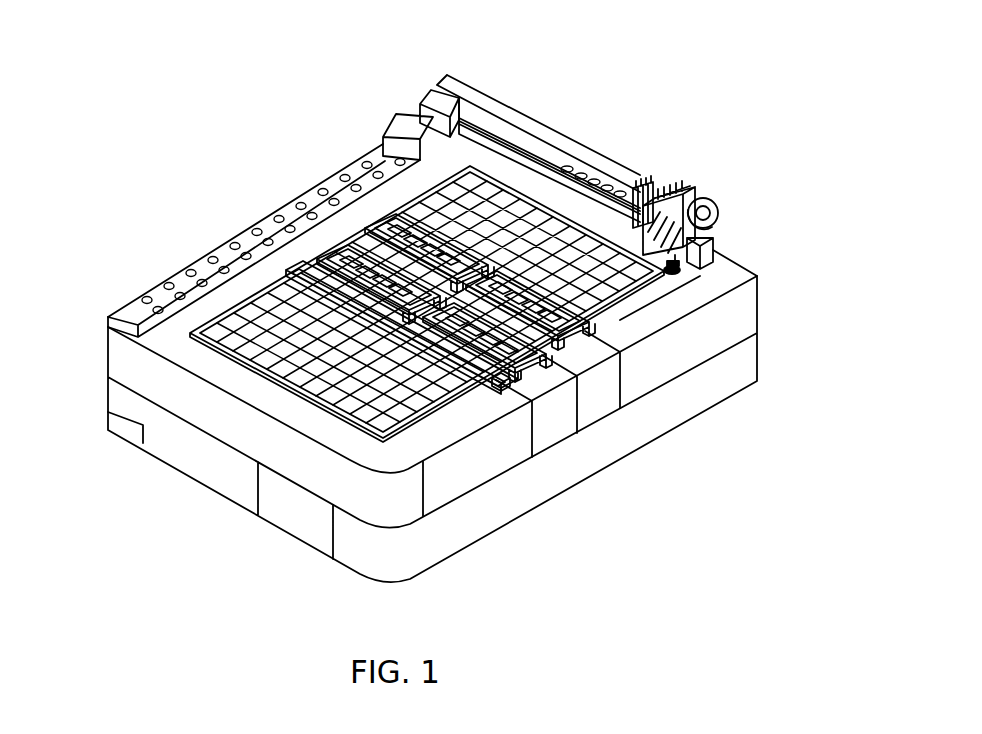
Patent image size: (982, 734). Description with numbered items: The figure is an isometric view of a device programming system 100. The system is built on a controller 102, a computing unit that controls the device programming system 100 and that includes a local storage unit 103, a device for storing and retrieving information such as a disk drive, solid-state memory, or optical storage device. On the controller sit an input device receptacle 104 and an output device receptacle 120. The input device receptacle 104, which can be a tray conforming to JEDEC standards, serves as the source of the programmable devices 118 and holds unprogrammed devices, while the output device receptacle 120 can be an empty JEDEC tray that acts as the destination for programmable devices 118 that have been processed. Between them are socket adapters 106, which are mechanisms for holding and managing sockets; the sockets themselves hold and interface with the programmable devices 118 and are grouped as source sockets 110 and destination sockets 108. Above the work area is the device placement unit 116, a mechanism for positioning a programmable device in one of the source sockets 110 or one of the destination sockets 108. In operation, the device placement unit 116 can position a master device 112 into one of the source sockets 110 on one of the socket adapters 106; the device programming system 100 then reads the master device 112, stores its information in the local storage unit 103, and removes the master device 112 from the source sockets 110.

The device programming system 100 is at (158, 58).
The controller 102 is at (177, 447).
The local storage unit 103 is at (124, 430).
The input device receptacle 104 is at (212, 359).
The socket adapters 106 is at (318, 320).
The destination sockets 108 is at (300, 283).
The source sockets 110 is at (292, 272).
The master device 112 is at (337, 268).
The device placement unit 116 is at (690, 180).
The programmable devices 118 is at (686, 278).
The output device receptacle 120 is at (626, 313).